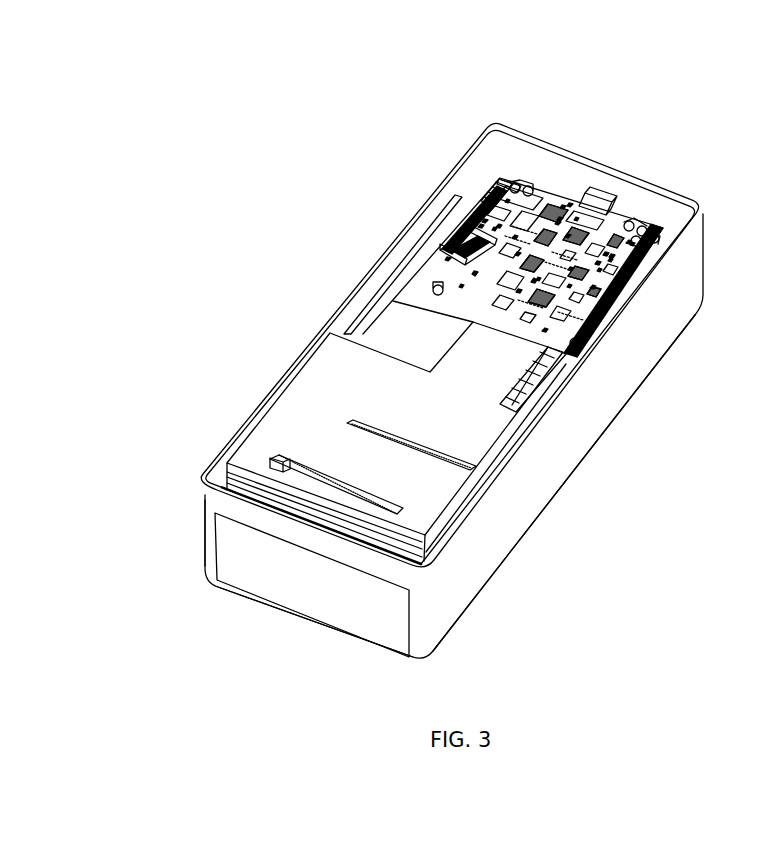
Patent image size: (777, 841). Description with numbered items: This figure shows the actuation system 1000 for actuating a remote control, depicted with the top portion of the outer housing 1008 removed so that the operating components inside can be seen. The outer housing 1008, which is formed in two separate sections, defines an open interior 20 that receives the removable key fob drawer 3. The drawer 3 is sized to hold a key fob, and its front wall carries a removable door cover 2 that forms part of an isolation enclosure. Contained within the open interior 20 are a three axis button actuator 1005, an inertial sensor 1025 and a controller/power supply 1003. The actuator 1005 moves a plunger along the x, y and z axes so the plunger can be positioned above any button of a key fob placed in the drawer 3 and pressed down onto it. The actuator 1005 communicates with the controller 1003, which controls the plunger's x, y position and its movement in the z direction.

The actuation system 1000 is at (353, 254).
The outer housing 1008 is at (600, 161).
The key fob drawer 3 is at (241, 613).
The door cover 2 is at (330, 606).
The three axis button actuator 1005 is at (324, 389).
The open interior 20 is at (457, 178).
The controller/power supply 1003 is at (512, 172).
The inertial sensor 1025 is at (650, 226).